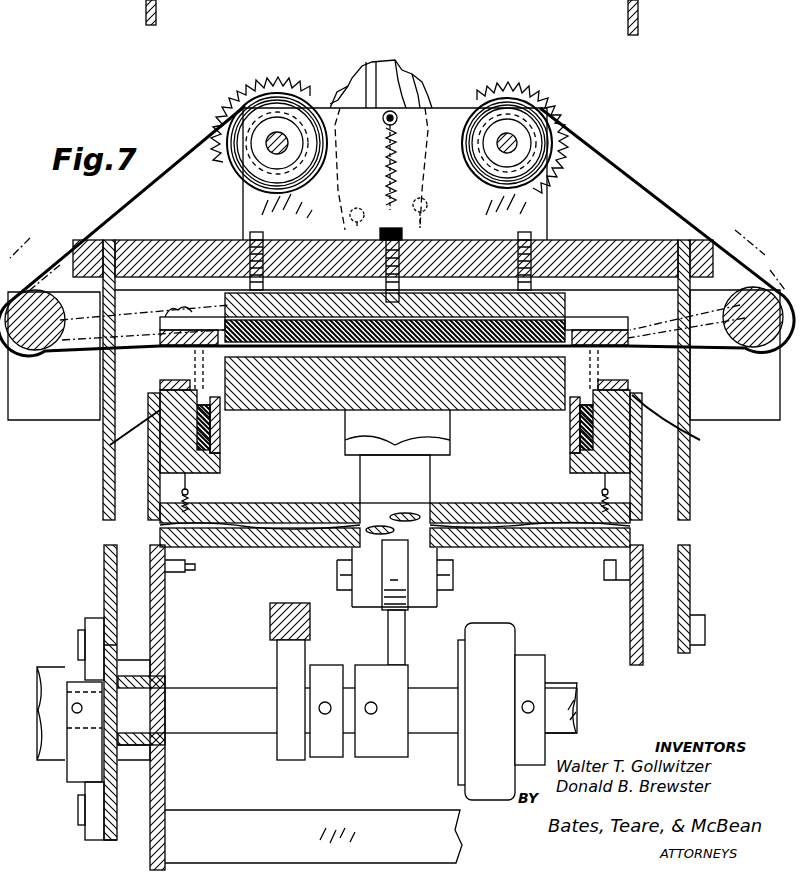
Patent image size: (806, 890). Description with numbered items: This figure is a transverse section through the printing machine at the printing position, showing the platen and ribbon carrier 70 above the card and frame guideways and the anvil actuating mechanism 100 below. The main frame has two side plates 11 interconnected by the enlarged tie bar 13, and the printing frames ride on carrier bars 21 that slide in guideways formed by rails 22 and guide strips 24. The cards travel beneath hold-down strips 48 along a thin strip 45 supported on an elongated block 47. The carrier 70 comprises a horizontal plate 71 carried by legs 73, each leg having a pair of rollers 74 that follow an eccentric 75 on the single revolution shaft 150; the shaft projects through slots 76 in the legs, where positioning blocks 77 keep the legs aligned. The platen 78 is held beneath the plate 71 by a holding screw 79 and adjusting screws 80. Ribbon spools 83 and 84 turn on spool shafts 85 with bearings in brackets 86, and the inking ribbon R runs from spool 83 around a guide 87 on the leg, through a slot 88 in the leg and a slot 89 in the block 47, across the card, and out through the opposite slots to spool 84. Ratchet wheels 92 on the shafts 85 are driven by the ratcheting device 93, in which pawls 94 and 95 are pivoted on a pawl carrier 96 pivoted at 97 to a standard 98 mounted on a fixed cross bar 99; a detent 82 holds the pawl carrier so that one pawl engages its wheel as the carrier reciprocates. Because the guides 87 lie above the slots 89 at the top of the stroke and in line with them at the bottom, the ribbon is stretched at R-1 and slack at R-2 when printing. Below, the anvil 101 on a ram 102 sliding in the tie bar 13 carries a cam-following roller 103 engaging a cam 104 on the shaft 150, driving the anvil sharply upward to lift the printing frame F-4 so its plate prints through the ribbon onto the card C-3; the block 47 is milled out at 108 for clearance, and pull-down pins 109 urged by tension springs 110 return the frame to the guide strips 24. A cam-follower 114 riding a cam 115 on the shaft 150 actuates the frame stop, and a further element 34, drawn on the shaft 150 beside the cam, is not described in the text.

The side plates 11 is at (156, 12).
The tie bar 13 is at (528, 540).
The carrier bars 21 is at (215, 455).
The rails 22 is at (165, 425).
The guide strips 24 is at (218, 435).
The flywheel 34 is at (515, 643).
The thin strip 45 is at (612, 352).
The elongated block 47 is at (708, 447).
The hold-down strips 48 is at (160, 338).
The platen and ribbon carrier 70 is at (451, 90).
The horizontal plate 71 is at (640, 245).
The legs 73 is at (103, 490).
The rollers 74 is at (90, 622).
The eccentric 75 is at (75, 775).
The slots 76 is at (110, 762).
The positioning blocks 77 is at (106, 700).
The platen 78 is at (560, 295).
The holding screw 79 is at (375, 255).
The adjusting screws 80 is at (250, 250).
The detent 82 is at (398, 120).
The ribbon spool 83 is at (271, 95).
The ribbon spool 84 is at (507, 98).
The spool shafts 85 is at (265, 135).
The brackets 86 is at (547, 206).
The guides 87 is at (28, 350).
The slot 88 is at (105, 355).
The slot 89 is at (170, 375).
The ratchet wheels 92 is at (244, 86).
The ratcheting device 93 is at (350, 62).
The pawl 94 is at (333, 102).
The pawl 95 is at (420, 85).
The pawl carrier 96 is at (402, 70).
The pivot 97 is at (398, 205).
The standard 98 is at (371, 60).
The cross bar 99 is at (205, 310).
The anvil actuating mechanism 100 is at (348, 489).
The anvil 101 is at (520, 395).
The ram 102 is at (395, 479).
The cam-following roller 103 is at (398, 630).
The cam 104 is at (378, 757).
The milled-out clearance 108 is at (255, 400).
The pull-down pins 109 is at (190, 485).
The tension springs 110 is at (188, 565).
The cam-follower 114 is at (270, 635).
The cam 115 is at (292, 760).
The single revolution shaft 150 is at (238, 728).
The inking ribbon R is at (620, 188).
The stretched ribbon position R-1 is at (80, 340).
The slack ribbon position R-2 is at (90, 365).
The card C-3 is at (545, 305).
The printing frame F-4 is at (468, 464).